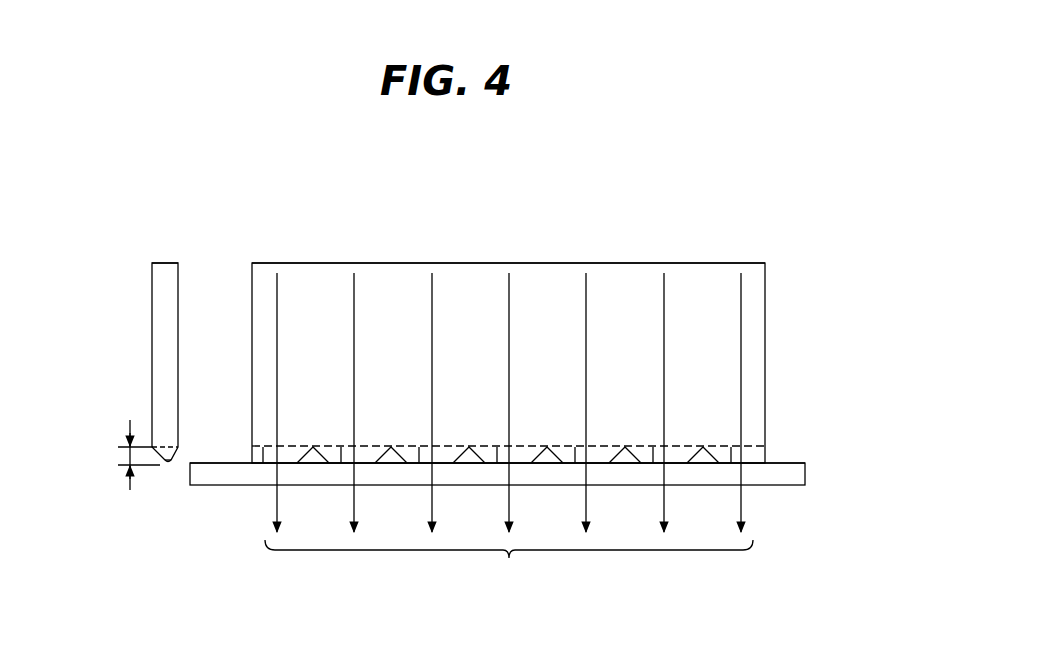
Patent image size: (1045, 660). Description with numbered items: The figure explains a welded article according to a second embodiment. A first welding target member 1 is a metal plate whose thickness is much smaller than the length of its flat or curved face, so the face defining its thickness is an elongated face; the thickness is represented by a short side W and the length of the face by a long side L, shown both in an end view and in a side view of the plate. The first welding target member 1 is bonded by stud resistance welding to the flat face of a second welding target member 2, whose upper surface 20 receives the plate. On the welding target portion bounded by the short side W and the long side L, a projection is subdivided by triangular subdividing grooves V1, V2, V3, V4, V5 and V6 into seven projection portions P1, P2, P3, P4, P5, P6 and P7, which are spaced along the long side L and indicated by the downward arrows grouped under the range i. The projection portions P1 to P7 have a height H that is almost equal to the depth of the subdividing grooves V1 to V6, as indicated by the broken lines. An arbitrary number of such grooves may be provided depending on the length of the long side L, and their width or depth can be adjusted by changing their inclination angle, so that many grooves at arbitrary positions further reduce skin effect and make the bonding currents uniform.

The first welding target member 1 is at (124, 334).
The second welding target member 2 is at (205, 497).
The workpiece surface 20 is at (230, 462).
The short side W is at (165, 262).
The long side L is at (408, 262).
The height of projection portions H is at (126, 455).
The projection portion P1 is at (263, 462).
The projection portion P2 is at (342, 462).
The projection portion P3 is at (420, 462).
The projection portion P4 is at (498, 462).
The projection portion P5 is at (576, 462).
The projection portion P6 is at (654, 462).
The projection portion P7 is at (732, 462).
The subdividing groove V1 is at (317, 458).
The subdividing groove V2 is at (395, 458).
The subdividing groove V3 is at (473, 458).
The subdividing groove V4 is at (551, 458).
The subdividing groove V5 is at (629, 458).
The subdividing groove V6 is at (707, 458).
The machining range i is at (509, 568).